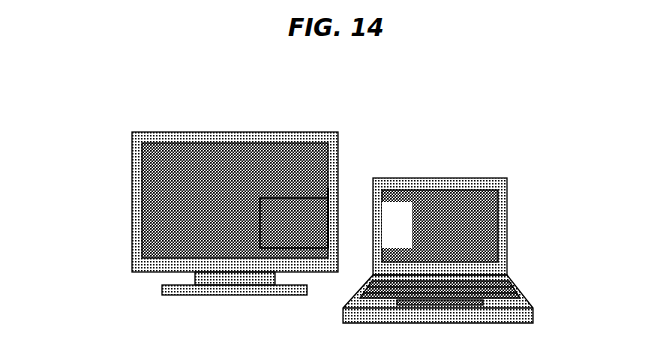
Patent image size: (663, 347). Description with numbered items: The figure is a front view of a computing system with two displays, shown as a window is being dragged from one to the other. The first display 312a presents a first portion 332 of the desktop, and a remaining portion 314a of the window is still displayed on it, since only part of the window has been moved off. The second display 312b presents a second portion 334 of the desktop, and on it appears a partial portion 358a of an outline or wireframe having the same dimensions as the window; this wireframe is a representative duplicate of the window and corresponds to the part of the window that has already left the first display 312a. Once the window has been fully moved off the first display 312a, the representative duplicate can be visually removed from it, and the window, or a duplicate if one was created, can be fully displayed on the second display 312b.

The second display 312b is at (131, 170).
The second portion of the desktop 334 is at (231, 194).
The partial portion of the outline or wireframe 358a is at (260, 229).
The first display 312a is at (447, 178).
The first portion of the desktop 332 is at (471, 218).
The remaining portion of the window 314a is at (410, 227).